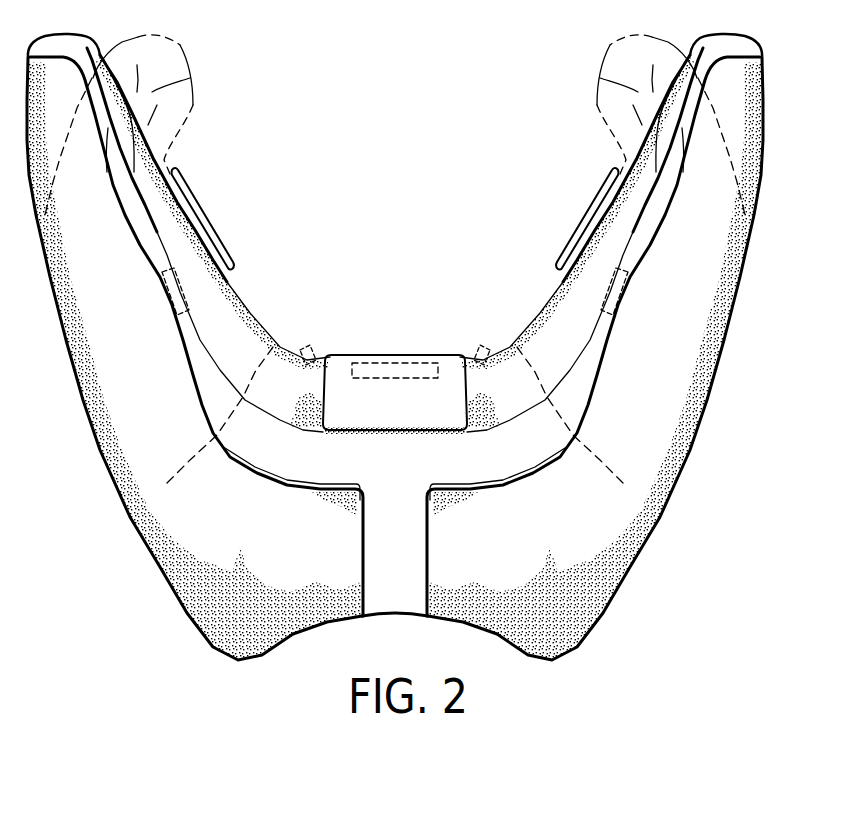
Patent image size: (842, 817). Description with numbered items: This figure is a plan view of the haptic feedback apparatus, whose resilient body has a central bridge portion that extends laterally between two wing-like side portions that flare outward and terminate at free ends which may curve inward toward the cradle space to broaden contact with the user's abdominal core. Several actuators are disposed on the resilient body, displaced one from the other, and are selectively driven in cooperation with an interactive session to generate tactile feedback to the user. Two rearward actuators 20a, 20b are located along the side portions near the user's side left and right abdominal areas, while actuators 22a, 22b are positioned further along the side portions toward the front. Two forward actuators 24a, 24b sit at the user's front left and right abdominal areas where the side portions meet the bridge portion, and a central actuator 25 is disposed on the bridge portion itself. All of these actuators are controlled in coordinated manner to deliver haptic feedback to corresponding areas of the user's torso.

The rearward actuator 20a is at (602, 210).
The rearward actuator 20b is at (193, 213).
The actuator 22a is at (604, 295).
The actuator 22b is at (183, 283).
The forward actuator 24a is at (486, 347).
The forward actuator 24b is at (302, 350).
The actuator 25 is at (396, 368).